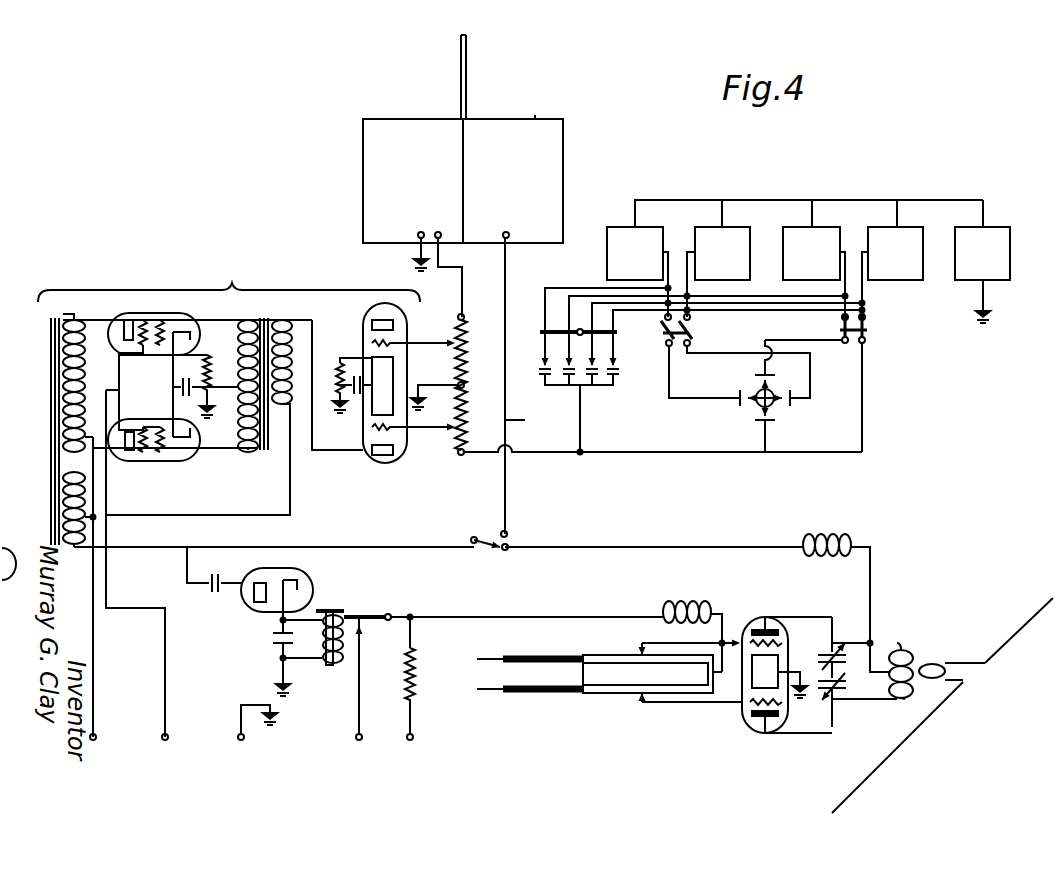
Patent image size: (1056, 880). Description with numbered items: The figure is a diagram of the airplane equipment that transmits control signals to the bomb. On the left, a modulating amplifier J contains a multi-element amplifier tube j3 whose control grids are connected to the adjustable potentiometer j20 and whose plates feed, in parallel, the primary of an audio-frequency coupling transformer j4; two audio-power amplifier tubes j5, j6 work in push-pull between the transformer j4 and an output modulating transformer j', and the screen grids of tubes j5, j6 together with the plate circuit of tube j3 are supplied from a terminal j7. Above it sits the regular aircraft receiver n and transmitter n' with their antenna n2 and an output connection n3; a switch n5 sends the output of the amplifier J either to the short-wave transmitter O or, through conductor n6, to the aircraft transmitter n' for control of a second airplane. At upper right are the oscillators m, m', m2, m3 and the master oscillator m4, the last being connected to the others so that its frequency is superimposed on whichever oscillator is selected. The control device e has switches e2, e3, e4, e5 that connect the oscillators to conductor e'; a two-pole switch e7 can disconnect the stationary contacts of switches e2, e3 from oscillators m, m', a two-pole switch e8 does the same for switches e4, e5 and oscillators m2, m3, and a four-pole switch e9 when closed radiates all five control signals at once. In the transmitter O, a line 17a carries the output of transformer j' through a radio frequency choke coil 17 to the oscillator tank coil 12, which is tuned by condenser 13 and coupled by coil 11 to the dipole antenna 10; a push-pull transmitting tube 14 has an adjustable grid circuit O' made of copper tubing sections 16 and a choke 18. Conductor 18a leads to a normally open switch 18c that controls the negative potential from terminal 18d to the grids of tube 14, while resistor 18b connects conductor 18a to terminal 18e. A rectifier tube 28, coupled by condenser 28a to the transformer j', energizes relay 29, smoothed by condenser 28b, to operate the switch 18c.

The output modulating transformer j' is at (166, 430).
The multi-element amplifier tube j3 is at (408, 322).
The audio-frequency coupling transformer j4 is at (234, 405).
The audio-power amplifier tube j5 is at (157, 313).
The audio-power amplifier tube j6 is at (185, 456).
The terminal j7 is at (169, 736).
The adjustable potentiometer j20 is at (468, 349).
The modulating amplifier J is at (229, 279).
The receiver n is at (463, 180).
The aircraft transmitter n' is at (532, 106).
The antenna n2 is at (468, 90).
The receiver output connection n3 is at (464, 276).
The switch n5 is at (492, 537).
The conductor n6 is at (526, 386).
The oscillator m is at (795, 258).
The oscillator m' is at (720, 258).
The oscillator m2 is at (815, 258).
The oscillator m3 is at (908, 281).
The master oscillator m4 is at (963, 285).
The control device e is at (755, 393).
The conductor e' is at (605, 420).
The switch e2 is at (738, 405).
The switch e3 is at (795, 403).
The switch e4 is at (772, 378).
The switch e5 is at (762, 425).
The two-pole switch e7 is at (662, 333).
The two-pole switch e8 is at (866, 333).
The four-pole switch e9 is at (702, 350).
The dipole transmitting antenna 10 is at (985, 668).
The coupling coil 11 is at (933, 663).
The oscillator tank or plate coil 12 is at (894, 648).
The tuning condenser 13 is at (840, 694).
The push-pull transmitting radio tube 14 is at (752, 625).
The copper tubing sections 16 is at (492, 693).
The radio frequency choke-coil 17 is at (826, 536).
The line 17a is at (662, 542).
The choke coil 18 is at (693, 602).
The conductor 18a is at (595, 606).
The resistor 18b is at (417, 672).
The normally open switch 18c is at (368, 614).
The terminal 18d is at (364, 733).
The terminal 18e is at (415, 733).
The rectifier tube 28 is at (313, 601).
The condenser 28a is at (215, 598).
The condenser 28b is at (275, 645).
The relay 29 is at (333, 651).
The short-wave transmitter O is at (801, 654).
The adjustable grid-circuit O' is at (682, 715).